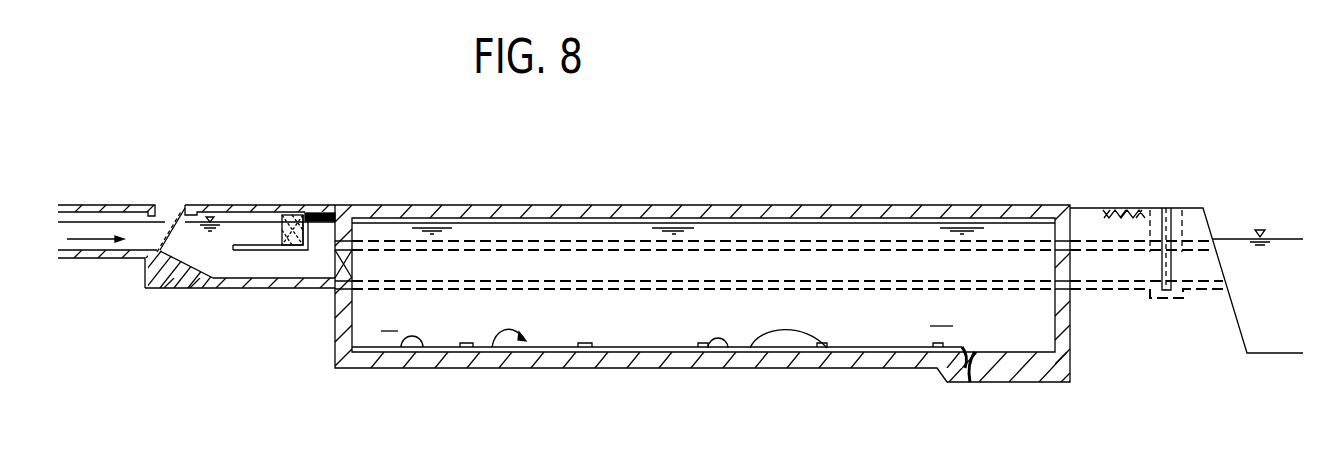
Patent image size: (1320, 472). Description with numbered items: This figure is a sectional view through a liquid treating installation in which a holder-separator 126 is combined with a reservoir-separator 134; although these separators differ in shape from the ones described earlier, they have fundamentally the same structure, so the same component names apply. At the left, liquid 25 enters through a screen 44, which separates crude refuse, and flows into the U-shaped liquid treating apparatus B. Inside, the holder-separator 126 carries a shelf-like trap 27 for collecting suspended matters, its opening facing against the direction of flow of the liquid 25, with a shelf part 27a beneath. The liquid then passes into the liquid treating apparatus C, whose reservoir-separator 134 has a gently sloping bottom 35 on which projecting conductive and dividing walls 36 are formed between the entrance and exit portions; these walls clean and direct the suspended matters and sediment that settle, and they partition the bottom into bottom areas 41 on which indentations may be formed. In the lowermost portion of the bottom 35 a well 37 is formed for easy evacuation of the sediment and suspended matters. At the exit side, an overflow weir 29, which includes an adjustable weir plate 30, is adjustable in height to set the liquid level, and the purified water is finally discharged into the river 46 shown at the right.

The liquid 25 is at (82, 230).
The screen 44 is at (178, 212).
The liquid treating apparatus B is at (298, 203).
The shelf-like trap 27 is at (260, 237).
The holder-separator 126 is at (288, 214).
The shelf part 27a is at (245, 253).
The liquid treating apparatus C is at (701, 204).
The bottom areas 41 is at (423, 350).
The reservoir-separator 134 is at (558, 367).
The bottom 35 is at (490, 348).
The conductive and dividing walls 36 is at (748, 348).
The well 37 is at (963, 383).
The overflow weir 29 is at (1162, 200).
The adjustable weir plate 30 is at (1160, 258).
The river 46 is at (1290, 302).